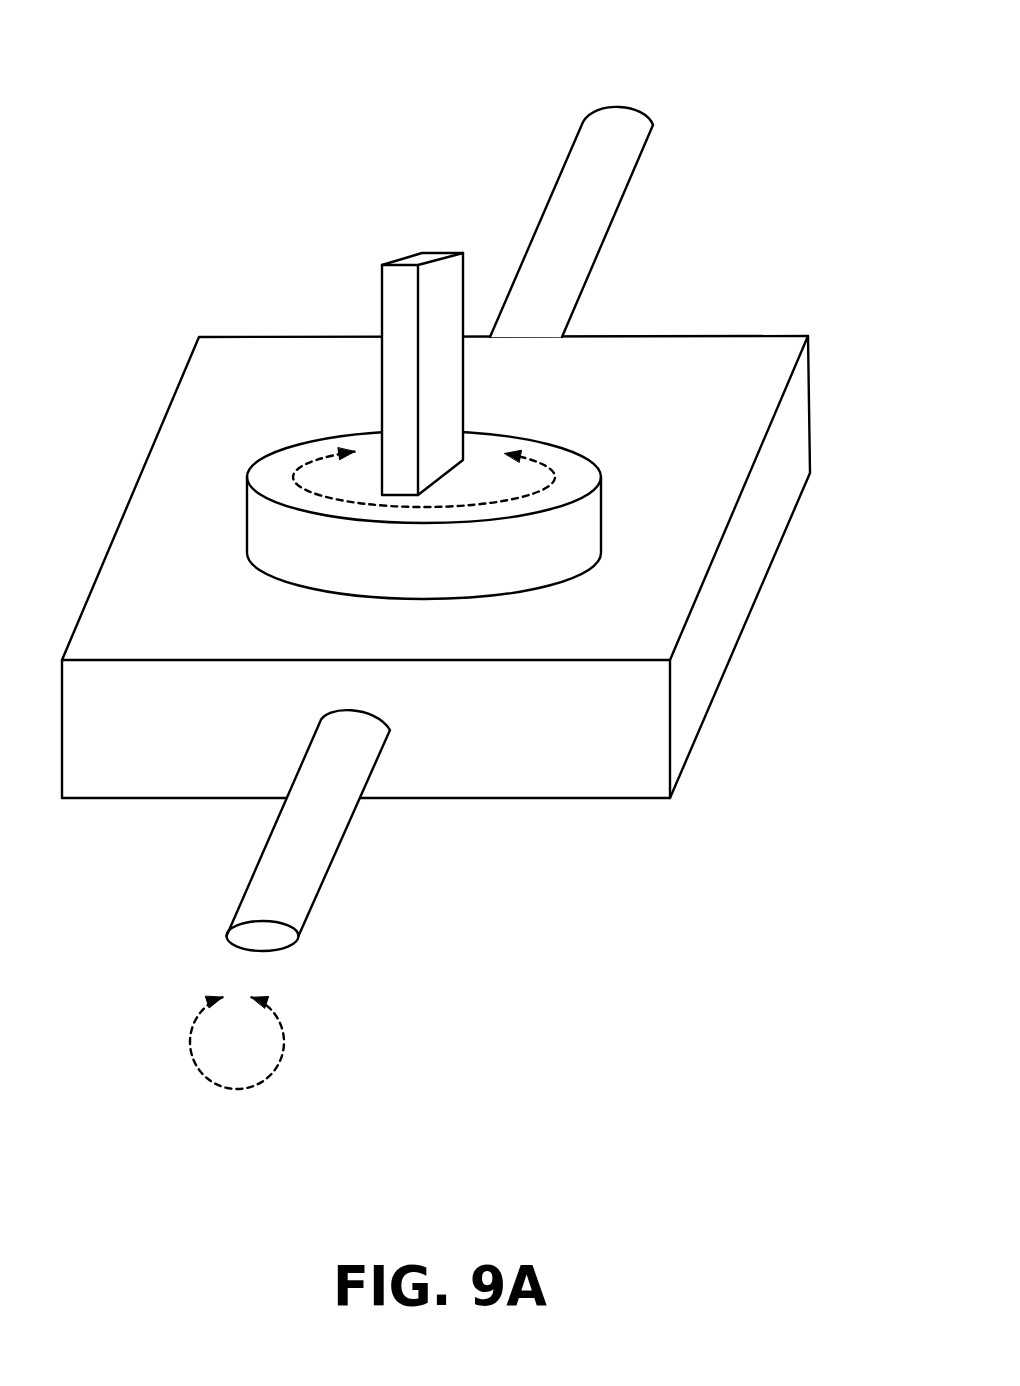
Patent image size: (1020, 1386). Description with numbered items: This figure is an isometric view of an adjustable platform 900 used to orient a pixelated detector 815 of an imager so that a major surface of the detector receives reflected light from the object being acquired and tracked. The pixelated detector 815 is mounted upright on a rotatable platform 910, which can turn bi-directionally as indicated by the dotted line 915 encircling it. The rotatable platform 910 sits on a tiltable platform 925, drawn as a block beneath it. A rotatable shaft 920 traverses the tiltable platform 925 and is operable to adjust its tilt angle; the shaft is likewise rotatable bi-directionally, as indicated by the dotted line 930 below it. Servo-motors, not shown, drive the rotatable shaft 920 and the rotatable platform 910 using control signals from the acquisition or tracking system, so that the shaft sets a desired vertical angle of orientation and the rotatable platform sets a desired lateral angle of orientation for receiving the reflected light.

The adjustable platform 900 is at (787, 100).
The pixelated detector 815 is at (380, 287).
The rotatable platform 910 is at (604, 508).
The dotted line 915 is at (557, 475).
The rotatable shaft 920 is at (328, 870).
The tiltable platform 925 is at (580, 800).
The dotted line 930 is at (283, 1057).